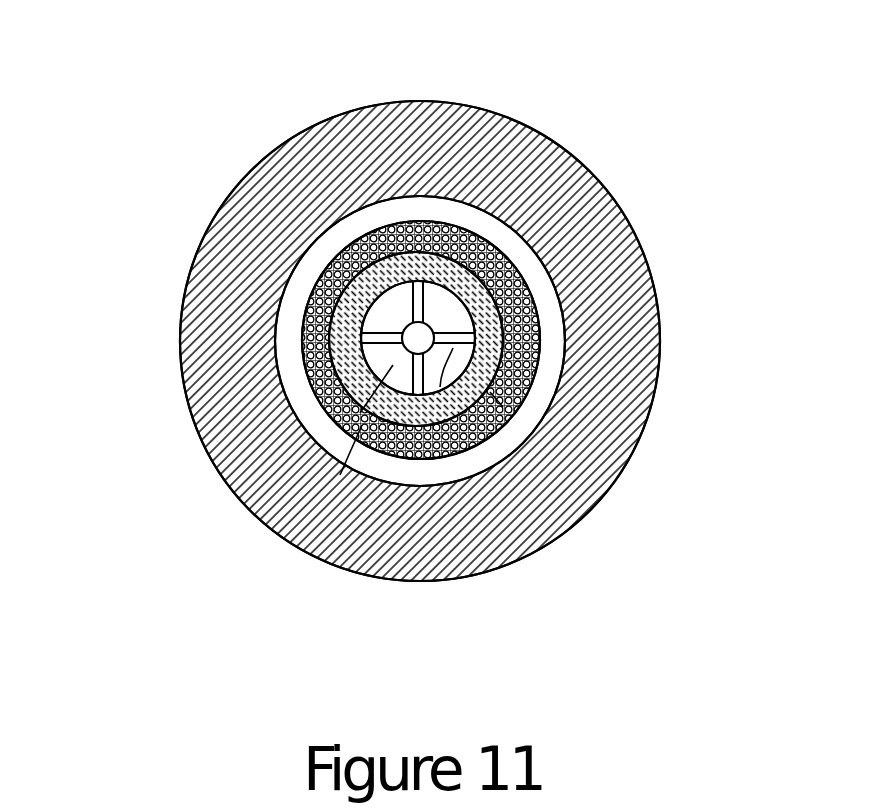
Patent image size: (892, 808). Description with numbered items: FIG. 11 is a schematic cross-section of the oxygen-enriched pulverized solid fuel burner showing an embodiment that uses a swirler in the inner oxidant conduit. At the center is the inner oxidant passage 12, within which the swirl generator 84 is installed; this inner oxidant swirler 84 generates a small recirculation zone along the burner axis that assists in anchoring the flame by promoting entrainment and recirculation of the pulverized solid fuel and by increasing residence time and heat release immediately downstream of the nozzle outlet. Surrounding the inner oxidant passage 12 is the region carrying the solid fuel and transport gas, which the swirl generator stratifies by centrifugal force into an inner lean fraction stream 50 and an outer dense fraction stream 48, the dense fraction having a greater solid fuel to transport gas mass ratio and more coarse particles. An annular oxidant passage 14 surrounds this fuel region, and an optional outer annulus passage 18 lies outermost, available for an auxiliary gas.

The inner oxidant passage 12 is at (293, 537).
The annular oxidant passage 14 is at (538, 293).
The outer annulus passage 18 is at (608, 487).
The outer dense fraction stream 48 is at (465, 222).
The inner lean fraction stream 50 is at (307, 320).
The swirl generator 84 is at (468, 420).